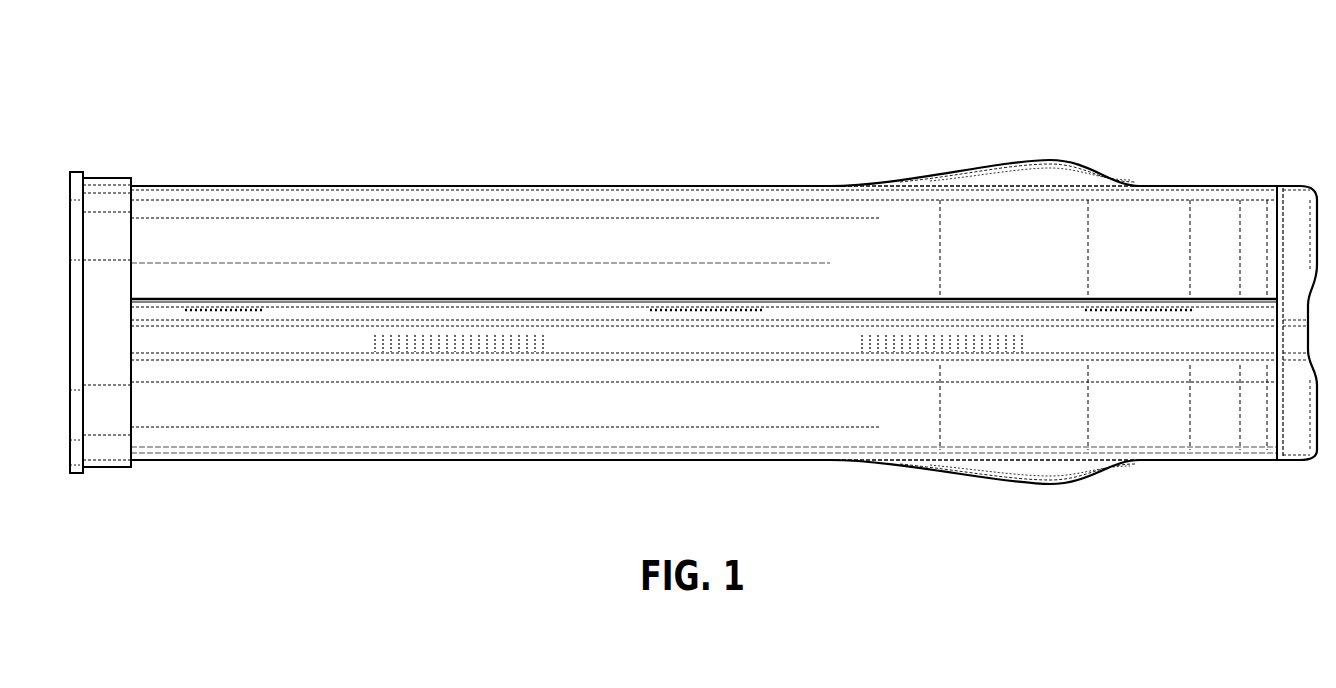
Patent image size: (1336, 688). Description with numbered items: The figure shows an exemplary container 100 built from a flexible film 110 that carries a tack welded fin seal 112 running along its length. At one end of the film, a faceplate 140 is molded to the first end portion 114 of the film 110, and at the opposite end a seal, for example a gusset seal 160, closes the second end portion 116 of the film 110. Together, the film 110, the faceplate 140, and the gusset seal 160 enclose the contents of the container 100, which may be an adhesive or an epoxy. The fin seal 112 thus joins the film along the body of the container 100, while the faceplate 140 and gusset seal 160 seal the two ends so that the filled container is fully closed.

The container 100 is at (696, 112).
The flexible film 110 is at (828, 208).
The tack welded fin seal 112 is at (661, 345).
The first end portion 114 is at (148, 486).
The second end portion 116 is at (1210, 486).
The faceplate 140 is at (107, 190).
The gusset seal 160 is at (1268, 206).